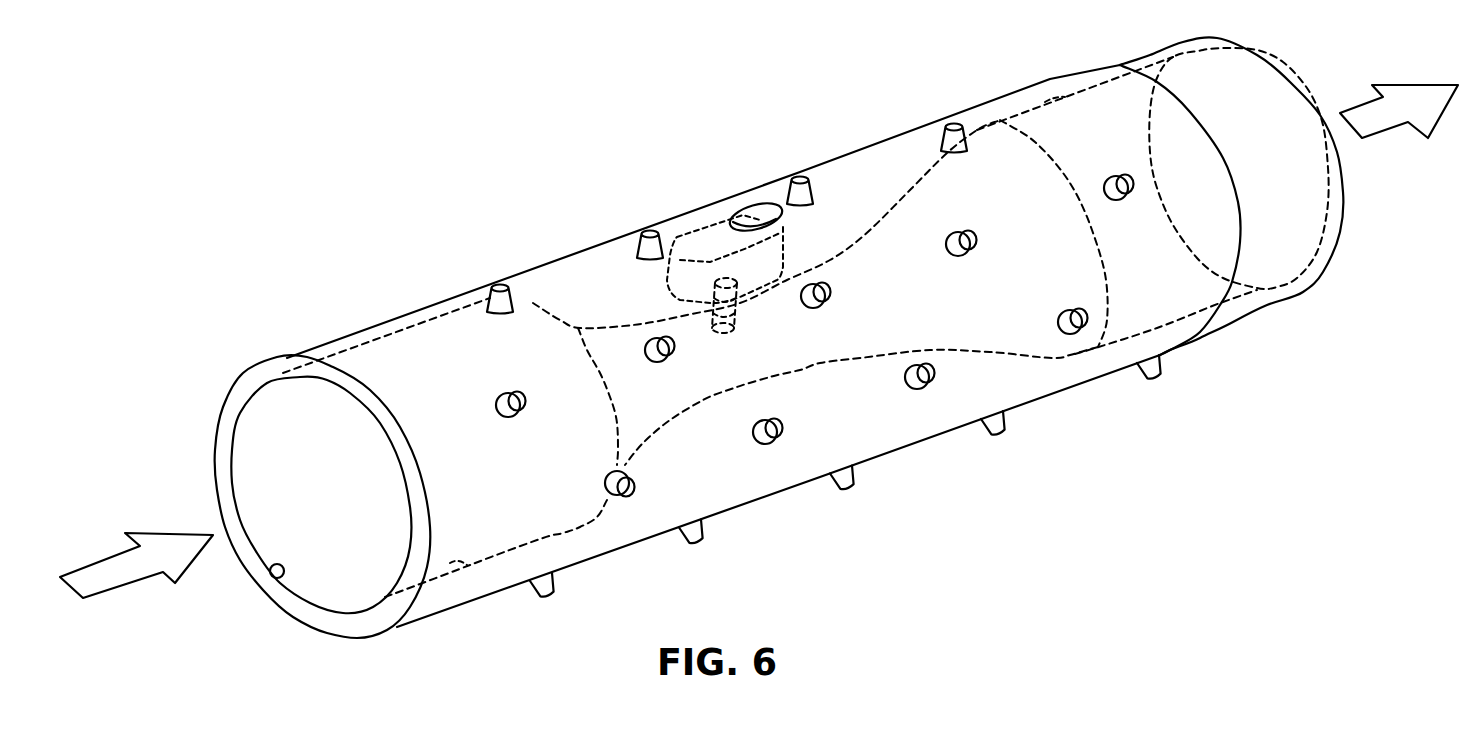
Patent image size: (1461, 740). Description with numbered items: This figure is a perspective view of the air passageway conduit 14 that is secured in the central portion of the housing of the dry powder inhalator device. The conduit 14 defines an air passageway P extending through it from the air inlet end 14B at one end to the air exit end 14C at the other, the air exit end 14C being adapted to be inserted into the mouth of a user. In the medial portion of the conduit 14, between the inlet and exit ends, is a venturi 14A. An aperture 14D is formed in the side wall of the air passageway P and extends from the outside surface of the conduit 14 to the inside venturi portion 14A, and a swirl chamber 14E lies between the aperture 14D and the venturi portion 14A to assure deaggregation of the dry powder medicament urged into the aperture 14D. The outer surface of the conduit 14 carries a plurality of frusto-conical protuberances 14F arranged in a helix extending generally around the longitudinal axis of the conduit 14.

The air passageway conduit 14 is at (578, 124).
The venturi 14A is at (855, 243).
The air inlet end 14B is at (270, 572).
The air exit end 14C is at (1263, 62).
The aperture 14D is at (755, 209).
The swirl chamber 14E is at (677, 240).
The frusto-conical protuberances 14F is at (517, 393).
The air passageway P is at (1040, 100).